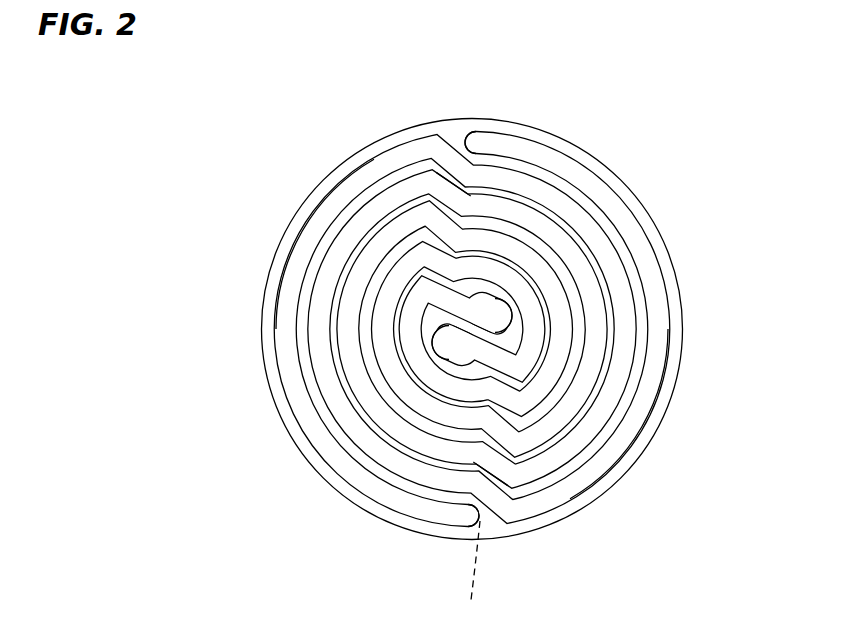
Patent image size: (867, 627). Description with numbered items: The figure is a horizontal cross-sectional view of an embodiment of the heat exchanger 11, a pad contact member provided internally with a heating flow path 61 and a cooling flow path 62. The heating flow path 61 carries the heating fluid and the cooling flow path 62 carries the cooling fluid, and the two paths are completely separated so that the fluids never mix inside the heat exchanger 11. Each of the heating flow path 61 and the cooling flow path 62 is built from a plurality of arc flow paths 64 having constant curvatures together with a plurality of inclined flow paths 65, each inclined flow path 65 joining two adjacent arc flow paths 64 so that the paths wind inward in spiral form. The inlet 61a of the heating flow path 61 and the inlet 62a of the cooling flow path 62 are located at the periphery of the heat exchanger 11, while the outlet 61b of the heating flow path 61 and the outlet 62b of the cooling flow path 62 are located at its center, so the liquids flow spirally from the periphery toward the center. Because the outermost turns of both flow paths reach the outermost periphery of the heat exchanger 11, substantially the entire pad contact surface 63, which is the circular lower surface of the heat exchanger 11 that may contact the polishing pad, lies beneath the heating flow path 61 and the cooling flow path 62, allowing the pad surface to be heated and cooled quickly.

The heat exchanger 11 is at (243, 278).
The heating flow path 61 is at (637, 437).
The cooling flow path 62 is at (336, 184).
The inlet of the heating flow path 61a is at (477, 141).
The outlet of the heating flow path 61b is at (450, 347).
The inlet of the cooling flow path 62a is at (467, 518).
The outlet of the cooling flow path 62b is at (500, 311).
The pad contact surface 63 is at (468, 572).
The arc flow paths 64 is at (321, 263).
The inclined flow paths 65 is at (445, 190).